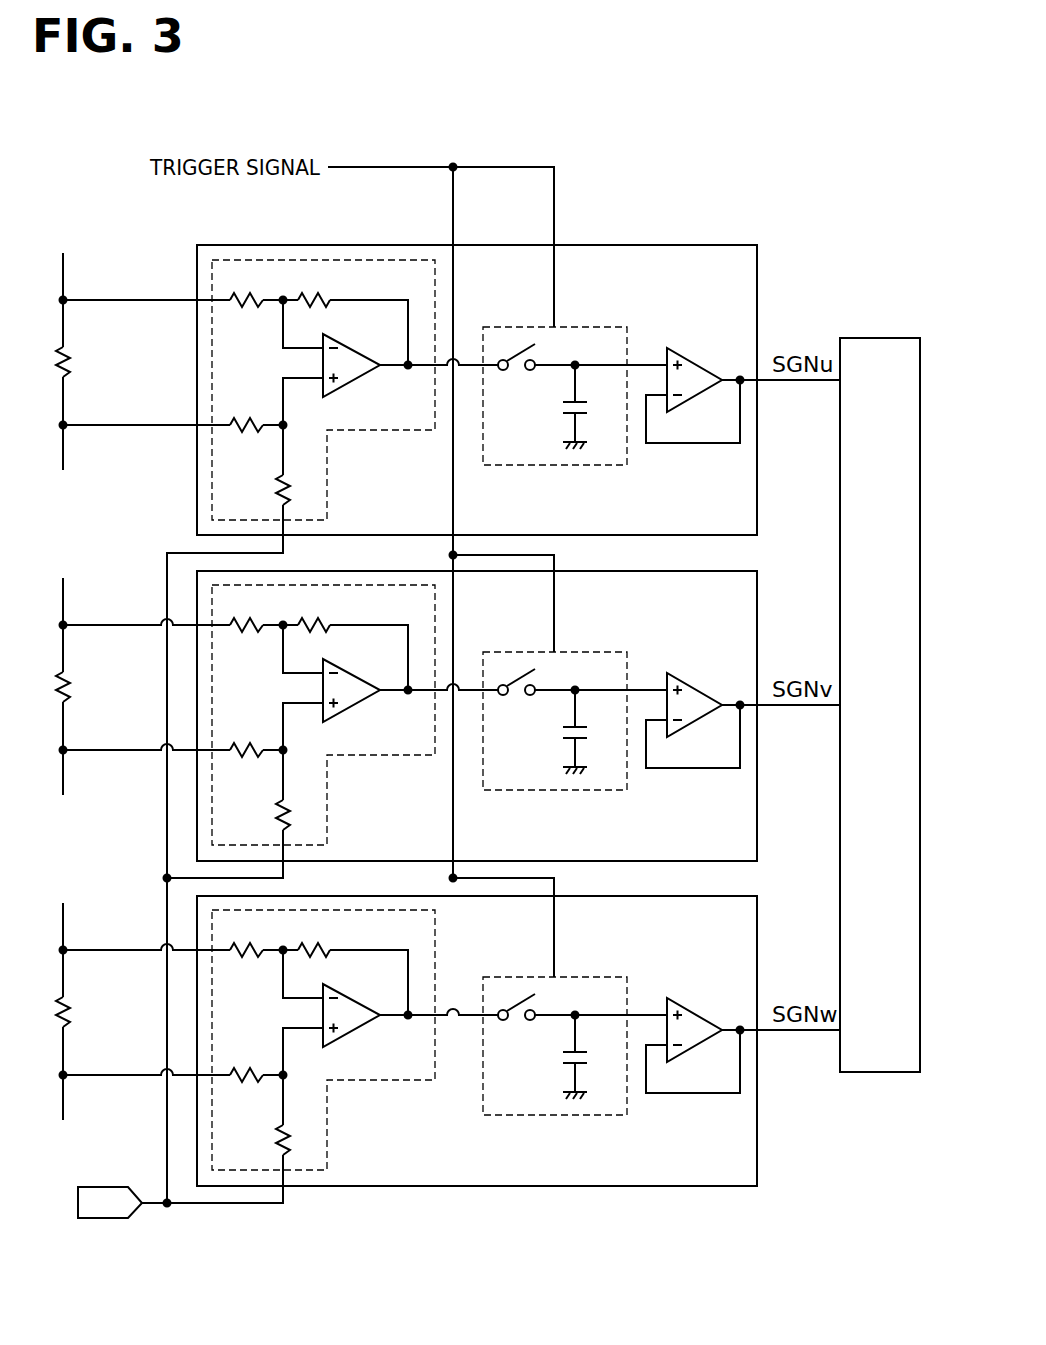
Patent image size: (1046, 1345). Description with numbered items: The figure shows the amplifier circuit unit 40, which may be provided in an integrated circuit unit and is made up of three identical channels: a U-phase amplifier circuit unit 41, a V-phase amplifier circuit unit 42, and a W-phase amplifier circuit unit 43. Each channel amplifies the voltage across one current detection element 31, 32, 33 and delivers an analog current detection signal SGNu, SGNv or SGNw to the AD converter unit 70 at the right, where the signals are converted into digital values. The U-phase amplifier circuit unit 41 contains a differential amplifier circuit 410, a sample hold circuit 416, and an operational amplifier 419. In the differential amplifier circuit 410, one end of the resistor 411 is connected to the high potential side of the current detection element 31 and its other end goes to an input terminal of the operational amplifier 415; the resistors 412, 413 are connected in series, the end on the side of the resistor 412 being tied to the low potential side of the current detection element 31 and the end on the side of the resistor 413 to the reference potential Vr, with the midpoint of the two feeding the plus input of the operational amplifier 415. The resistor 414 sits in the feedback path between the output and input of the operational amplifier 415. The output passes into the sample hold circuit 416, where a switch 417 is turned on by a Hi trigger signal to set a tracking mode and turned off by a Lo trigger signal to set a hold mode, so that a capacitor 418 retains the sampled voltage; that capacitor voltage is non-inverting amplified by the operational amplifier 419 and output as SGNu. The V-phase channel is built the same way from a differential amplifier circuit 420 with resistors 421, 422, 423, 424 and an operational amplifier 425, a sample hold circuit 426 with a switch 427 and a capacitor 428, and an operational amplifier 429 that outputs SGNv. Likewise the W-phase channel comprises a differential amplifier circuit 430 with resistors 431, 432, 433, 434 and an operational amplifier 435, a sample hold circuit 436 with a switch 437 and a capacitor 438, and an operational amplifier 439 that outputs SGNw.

The current detection element 31 is at (62, 352).
The current detection element 32 is at (62, 677).
The current detection element 33 is at (62, 1002).
The amplifier circuit unit 40 is at (730, 1200).
The U-phase amplifier circuit unit 41 is at (197, 365).
The V-phase amplifier circuit unit 42 is at (197, 690).
The W-phase amplifier circuit unit 43 is at (197, 1015).
The AD converter unit 70 is at (861, 337).
The differential amplifier circuit 410 is at (372, 432).
The resistor 411 is at (240, 308).
The resistor 412 is at (246, 418).
The resistor 413 is at (280, 500).
The resistor 414 is at (318, 298).
The operational amplifier 415 is at (365, 378).
The sample hold circuit 416 is at (500, 325).
The switch 417 is at (504, 372).
The capacitor 418 is at (568, 415).
The operational amplifier 419 is at (694, 350).
The differential amplifier circuit 420 is at (372, 757).
The resistor 421 is at (240, 633).
The resistor 422 is at (246, 743).
The resistor 423 is at (280, 825).
The resistor 424 is at (318, 623).
The operational amplifier 425 is at (365, 703).
The sample hold circuit 426 is at (500, 650).
The switch 427 is at (504, 697).
The capacitor 428 is at (568, 740).
The operational amplifier 429 is at (694, 675).
The differential amplifier circuit 430 is at (372, 1082).
The resistor 431 is at (240, 958).
The resistor 432 is at (246, 1068).
The resistor 433 is at (280, 1150).
The resistor 434 is at (318, 948).
The operational amplifier 435 is at (365, 1028).
The sample hold circuit 436 is at (500, 975).
The switch 437 is at (504, 1022).
The capacitor 438 is at (568, 1065).
The operational amplifier 439 is at (694, 1000).